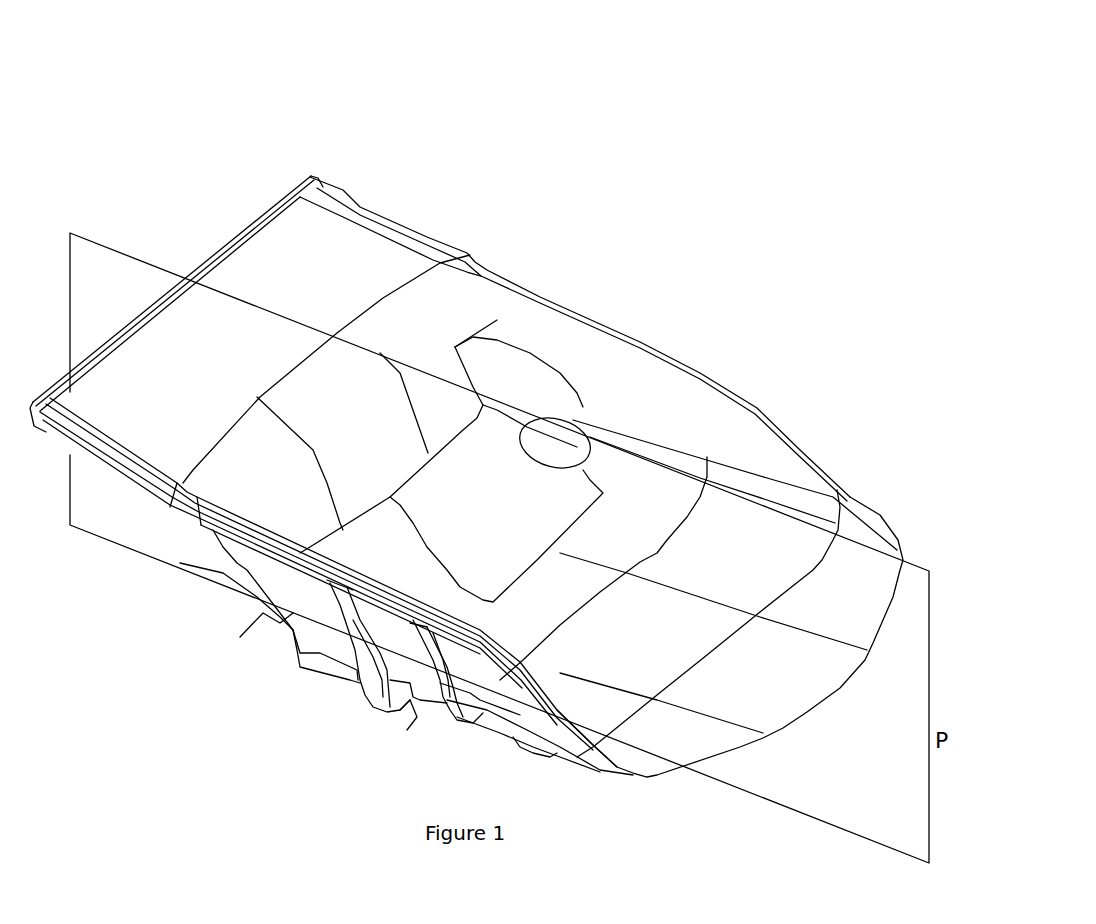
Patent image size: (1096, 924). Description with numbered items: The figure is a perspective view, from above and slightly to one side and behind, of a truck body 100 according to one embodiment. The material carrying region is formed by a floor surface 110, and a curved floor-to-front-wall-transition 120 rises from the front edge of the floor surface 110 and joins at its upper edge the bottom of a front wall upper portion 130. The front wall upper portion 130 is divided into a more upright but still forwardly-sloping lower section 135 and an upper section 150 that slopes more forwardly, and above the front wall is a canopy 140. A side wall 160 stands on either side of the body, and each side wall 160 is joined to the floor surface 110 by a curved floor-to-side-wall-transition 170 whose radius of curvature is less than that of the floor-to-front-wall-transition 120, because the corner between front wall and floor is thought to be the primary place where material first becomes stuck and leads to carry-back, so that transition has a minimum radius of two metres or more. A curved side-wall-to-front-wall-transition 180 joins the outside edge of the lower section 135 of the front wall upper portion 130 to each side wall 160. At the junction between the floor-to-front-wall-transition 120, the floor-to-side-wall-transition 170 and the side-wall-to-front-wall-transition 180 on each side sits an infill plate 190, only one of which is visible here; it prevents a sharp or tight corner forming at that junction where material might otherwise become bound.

The truck body 100 is at (674, 316).
The floor surface 110 is at (740, 573).
The floor-to-front-wall-transition 120 is at (482, 523).
The front wall upper portion 130 is at (358, 455).
The lower section 135 is at (448, 363).
The canopy 140 is at (278, 262).
The upper section 150 is at (440, 310).
The side wall 160 is at (607, 373).
The floor-to-side-wall-transition 170 is at (730, 507).
The side-wall-to-front-wall-transition 180 is at (527, 387).
The infill plate 190 is at (572, 455).